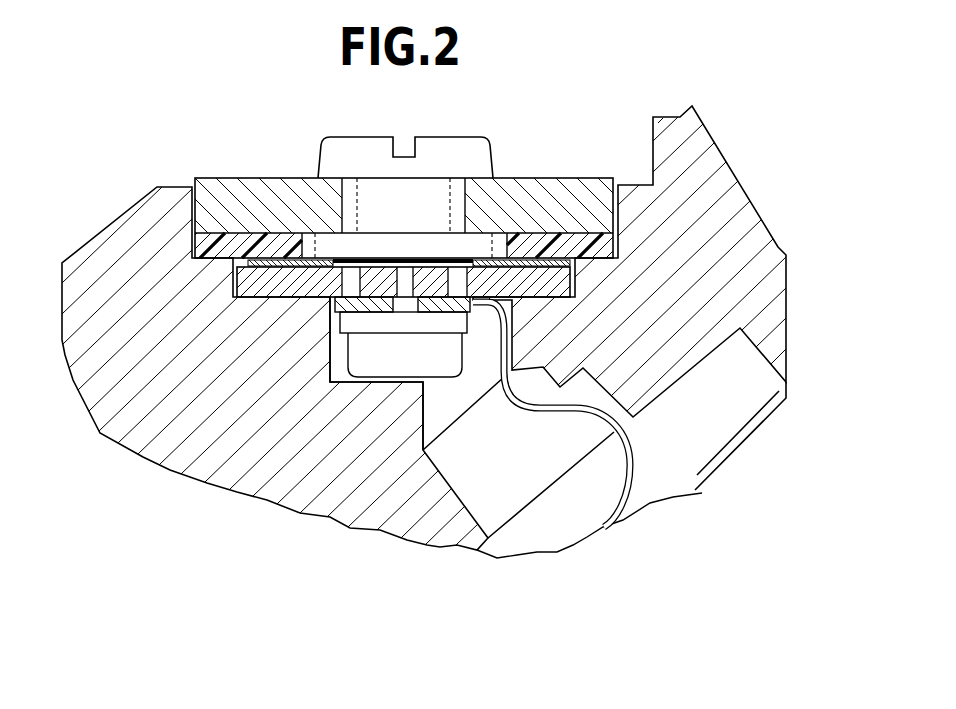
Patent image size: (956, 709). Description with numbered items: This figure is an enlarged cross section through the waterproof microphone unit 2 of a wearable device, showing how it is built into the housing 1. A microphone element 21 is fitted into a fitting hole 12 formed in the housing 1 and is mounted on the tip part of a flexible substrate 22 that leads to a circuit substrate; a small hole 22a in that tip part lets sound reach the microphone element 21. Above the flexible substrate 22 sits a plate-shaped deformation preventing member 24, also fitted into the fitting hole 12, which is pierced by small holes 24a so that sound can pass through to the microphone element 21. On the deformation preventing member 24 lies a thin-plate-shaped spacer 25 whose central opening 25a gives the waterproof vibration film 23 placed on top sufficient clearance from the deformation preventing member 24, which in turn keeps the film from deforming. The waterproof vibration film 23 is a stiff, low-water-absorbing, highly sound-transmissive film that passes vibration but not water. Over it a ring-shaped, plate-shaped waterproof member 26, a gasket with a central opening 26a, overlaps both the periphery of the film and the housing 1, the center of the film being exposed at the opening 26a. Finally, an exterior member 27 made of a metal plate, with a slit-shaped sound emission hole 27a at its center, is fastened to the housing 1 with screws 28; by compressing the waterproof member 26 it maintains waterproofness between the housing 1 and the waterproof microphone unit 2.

The housing 1 is at (738, 212).
The waterproof microphone unit 2 is at (217, 123).
The fitting hole 12 is at (343, 373).
The microphone element 21 is at (417, 362).
The flexible substrate 22 is at (548, 417).
The small hole 22a is at (407, 310).
The waterproof vibration film 23 is at (410, 262).
The deformation preventing member 24 is at (272, 290).
The small holes 24a is at (338, 300).
The spacer 25 is at (517, 258).
The opening 25a is at (380, 262).
The waterproof member 26 is at (280, 247).
The opening 26a is at (470, 247).
The exterior member 27 is at (598, 185).
The sound emission hole 27a is at (405, 197).
The screws 28 is at (473, 150).